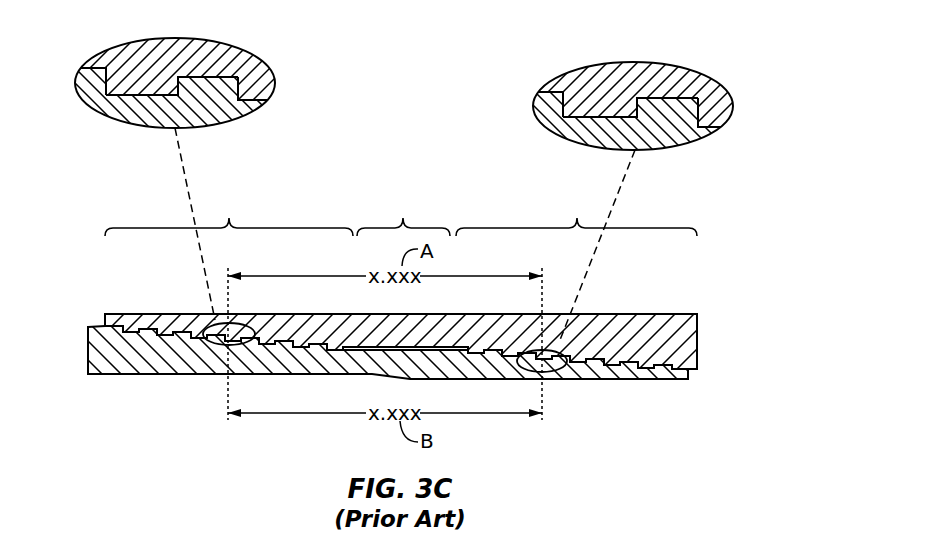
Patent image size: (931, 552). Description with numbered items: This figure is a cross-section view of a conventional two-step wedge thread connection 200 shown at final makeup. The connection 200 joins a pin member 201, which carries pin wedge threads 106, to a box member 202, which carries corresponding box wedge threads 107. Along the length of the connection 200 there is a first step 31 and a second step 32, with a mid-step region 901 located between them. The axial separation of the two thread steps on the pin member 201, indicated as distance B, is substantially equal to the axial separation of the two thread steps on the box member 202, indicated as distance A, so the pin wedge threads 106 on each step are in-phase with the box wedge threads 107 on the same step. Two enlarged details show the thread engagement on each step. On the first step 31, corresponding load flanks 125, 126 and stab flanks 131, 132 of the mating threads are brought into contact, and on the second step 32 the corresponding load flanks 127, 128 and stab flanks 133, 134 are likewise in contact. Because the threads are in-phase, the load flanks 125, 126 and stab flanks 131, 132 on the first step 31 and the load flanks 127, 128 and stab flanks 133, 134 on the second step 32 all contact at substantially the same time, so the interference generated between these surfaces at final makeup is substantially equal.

The load flank 125 is at (177, 77).
The load flank 126 is at (193, 88).
The stab flank 131 is at (90, 88).
The stab flank 132 is at (112, 74).
The load flank 127 is at (637, 100).
The load flank 128 is at (650, 109).
The stab flank 133 is at (556, 108).
The stab flank 134 is at (570, 102).
The first step 31 is at (229, 216).
The mid-step region 901 is at (403, 215).
The second step 32 is at (576, 215).
The two-step wedge thread connection 200 is at (648, 212).
The box wedge threads 107 is at (259, 338).
The pin wedge threads 106 is at (236, 345).
The pin member 201 is at (135, 361).
The box member 202 is at (688, 341).